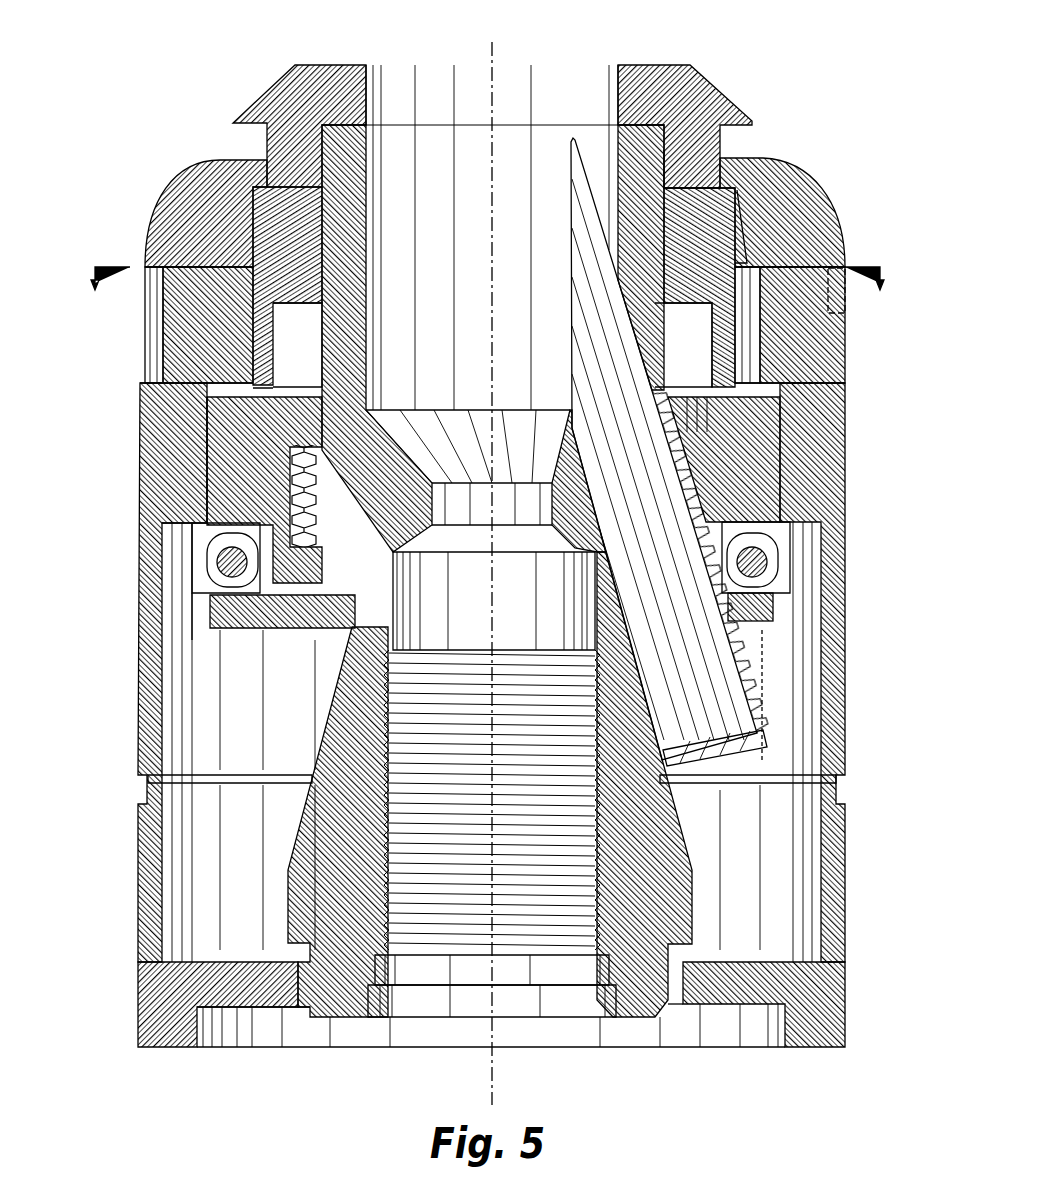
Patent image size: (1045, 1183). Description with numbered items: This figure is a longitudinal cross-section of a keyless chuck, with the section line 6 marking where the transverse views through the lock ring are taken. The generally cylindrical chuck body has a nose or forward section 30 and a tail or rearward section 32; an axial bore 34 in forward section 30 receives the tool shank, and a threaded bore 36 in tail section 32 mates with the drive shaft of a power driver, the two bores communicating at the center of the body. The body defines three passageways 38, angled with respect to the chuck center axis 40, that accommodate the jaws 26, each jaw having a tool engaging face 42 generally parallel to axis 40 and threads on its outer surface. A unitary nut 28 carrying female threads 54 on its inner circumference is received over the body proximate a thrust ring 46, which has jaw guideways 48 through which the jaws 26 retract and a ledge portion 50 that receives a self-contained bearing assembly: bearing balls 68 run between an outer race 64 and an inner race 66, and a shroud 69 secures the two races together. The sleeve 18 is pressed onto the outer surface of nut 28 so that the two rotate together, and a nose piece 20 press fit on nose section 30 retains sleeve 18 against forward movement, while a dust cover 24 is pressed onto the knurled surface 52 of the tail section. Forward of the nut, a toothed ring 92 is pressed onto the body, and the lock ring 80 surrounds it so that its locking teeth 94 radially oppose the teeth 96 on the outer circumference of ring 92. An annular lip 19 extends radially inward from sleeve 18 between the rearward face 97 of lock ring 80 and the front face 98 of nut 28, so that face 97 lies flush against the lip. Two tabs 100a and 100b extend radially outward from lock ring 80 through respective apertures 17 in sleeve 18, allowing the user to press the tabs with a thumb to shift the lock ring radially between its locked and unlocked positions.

The section line 6 is at (488, 291).
The apertures 17 is at (129, 364).
The sleeve 18 is at (840, 612).
The annular lip 19 is at (148, 406).
The nose piece 20 is at (718, 105).
The dust cover 24 is at (845, 945).
The jaws 26 is at (800, 265).
The nut 28 is at (783, 490).
The forward section 30 is at (672, 152).
The tail section 32 is at (690, 897).
The axial bore 34 is at (368, 173).
The threaded bore 36 is at (393, 925).
The passageways 38 is at (592, 68).
The chuck center axis 40 is at (490, 46).
The tool engaging face 42 is at (567, 172).
The thrust ring 46 is at (775, 603).
The jaw guideways 48 is at (727, 633).
The ledge portion 50 is at (240, 588).
The knurled surface 52 is at (690, 980).
The female threads 54 is at (400, 556).
The outer race 64 is at (213, 580).
The inner race 66 is at (218, 545).
The bearing balls 68 is at (200, 560).
The shroud 69 is at (790, 545).
The lock ring 80 is at (195, 268).
The toothed ring 92 is at (242, 215).
The locking teeth 94 is at (258, 323).
The teeth 96 is at (735, 343).
The rearward face 97 is at (258, 390).
The front face 98 is at (205, 430).
The tab 100a is at (150, 345).
The tab 100b is at (845, 283).